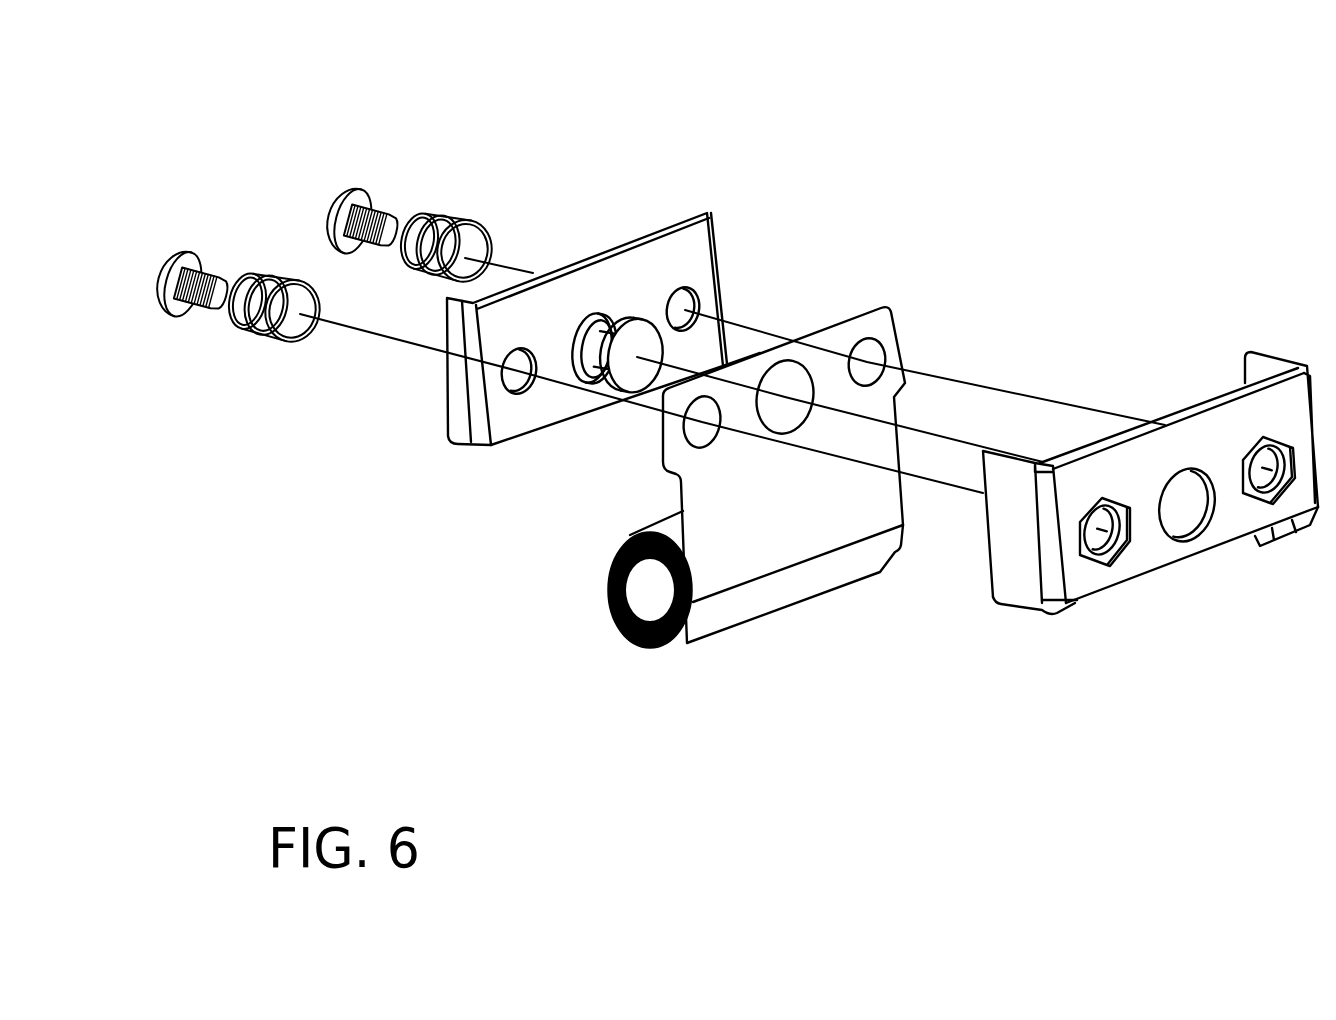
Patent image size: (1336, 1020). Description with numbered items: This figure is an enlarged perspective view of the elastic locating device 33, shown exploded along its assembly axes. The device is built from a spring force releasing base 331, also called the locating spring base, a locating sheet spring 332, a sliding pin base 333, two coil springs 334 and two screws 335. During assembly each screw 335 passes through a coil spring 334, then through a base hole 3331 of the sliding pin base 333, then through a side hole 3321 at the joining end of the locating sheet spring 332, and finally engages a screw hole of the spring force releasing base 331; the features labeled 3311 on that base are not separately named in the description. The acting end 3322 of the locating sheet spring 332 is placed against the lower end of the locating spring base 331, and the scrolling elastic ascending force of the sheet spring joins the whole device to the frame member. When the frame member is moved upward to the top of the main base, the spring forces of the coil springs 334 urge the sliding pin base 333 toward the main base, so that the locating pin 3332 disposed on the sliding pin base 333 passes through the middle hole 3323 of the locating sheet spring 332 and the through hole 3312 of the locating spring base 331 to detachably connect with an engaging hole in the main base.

The elastic locating device 33 is at (252, 702).
The spring force releasing base 331 is at (1013, 577).
The nuts 3311 is at (1098, 498).
The through hole 3312 is at (1185, 542).
The locating sheet spring 332 is at (823, 500).
The side hole 3321 is at (703, 397).
The acting end 3322 is at (613, 603).
The middle hole 3323 is at (787, 397).
The sliding pin base 333 is at (510, 420).
The base hole 3331 is at (519, 350).
The locating pin 3332 is at (630, 387).
The coil springs 334 is at (300, 315).
The screws 335 is at (172, 252).